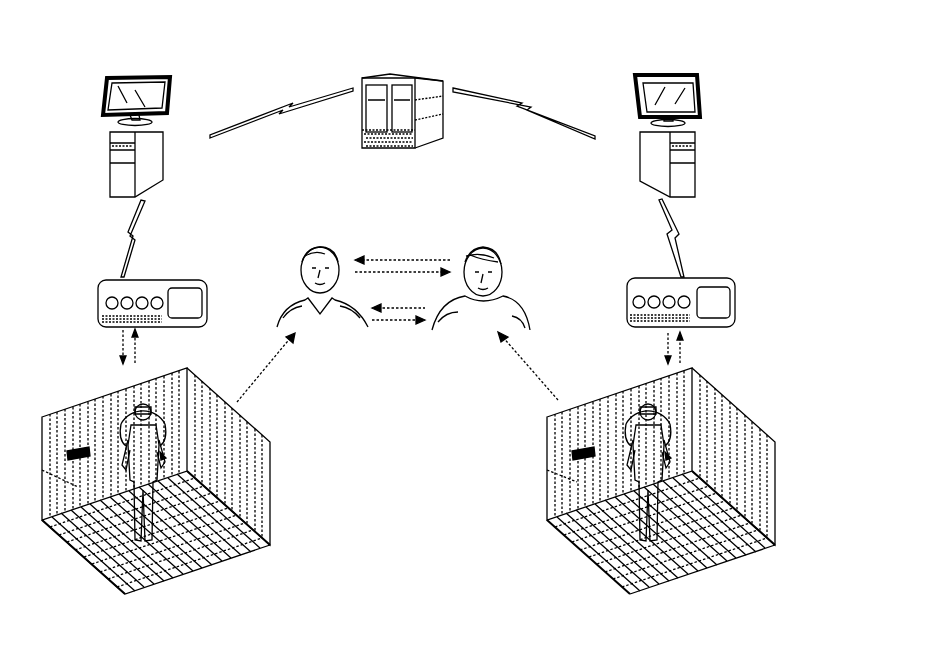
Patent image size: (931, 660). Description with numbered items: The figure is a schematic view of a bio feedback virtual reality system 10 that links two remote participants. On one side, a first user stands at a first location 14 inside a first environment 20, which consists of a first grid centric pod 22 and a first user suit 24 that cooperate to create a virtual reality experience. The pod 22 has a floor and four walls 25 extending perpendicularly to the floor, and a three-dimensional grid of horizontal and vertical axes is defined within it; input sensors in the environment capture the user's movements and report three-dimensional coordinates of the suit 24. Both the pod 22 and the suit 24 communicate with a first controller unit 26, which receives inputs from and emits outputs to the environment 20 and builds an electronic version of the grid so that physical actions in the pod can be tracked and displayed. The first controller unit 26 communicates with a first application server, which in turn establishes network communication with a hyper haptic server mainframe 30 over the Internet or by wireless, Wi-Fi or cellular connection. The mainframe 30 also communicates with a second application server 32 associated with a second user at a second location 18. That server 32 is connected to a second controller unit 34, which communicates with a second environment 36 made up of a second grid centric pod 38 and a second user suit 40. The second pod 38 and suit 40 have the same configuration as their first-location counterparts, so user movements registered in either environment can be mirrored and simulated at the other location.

The system 10 is at (565, 95).
The first location 14 is at (157, 486).
The second location 18 is at (659, 488).
The first environment 20 is at (168, 440).
The first pod 22 is at (198, 392).
The first user suit 24 is at (160, 456).
The walls 25 is at (763, 515).
The first controller unit 26 is at (188, 280).
The hyper haptic server mainframe 30 is at (440, 118).
The second application server 32 is at (683, 181).
The second controller unit 34 is at (735, 300).
The second environment 36 is at (720, 382).
The second pod 38 is at (583, 547).
The second user suit 40 is at (665, 457).